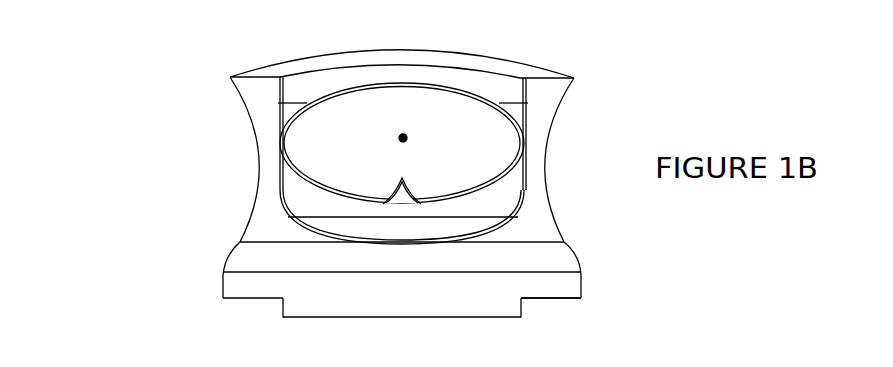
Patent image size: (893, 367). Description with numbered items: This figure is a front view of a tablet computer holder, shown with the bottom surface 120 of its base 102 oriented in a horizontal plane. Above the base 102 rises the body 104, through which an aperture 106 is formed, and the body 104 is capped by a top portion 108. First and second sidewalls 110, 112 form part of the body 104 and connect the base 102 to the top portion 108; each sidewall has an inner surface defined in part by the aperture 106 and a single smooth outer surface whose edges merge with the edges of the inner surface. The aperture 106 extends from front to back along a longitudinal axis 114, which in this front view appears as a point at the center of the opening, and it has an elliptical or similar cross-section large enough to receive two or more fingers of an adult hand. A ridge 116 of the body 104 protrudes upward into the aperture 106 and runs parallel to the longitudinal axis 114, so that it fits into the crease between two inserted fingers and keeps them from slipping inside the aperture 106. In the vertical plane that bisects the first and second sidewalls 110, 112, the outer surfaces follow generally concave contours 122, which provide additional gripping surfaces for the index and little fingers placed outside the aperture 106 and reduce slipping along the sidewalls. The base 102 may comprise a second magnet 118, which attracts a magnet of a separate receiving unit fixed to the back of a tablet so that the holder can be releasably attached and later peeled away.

The base 102 is at (207, 275).
The body 104 is at (265, 218).
The aperture 106 is at (447, 122).
The top portion 108 is at (390, 53).
The first sidewall 110 is at (265, 163).
The second sidewall 112 is at (536, 168).
The longitudinal axis 114 is at (408, 152).
The ridge 116 is at (398, 180).
The second magnet 118 is at (393, 318).
The bottom surface 120 is at (551, 303).
The concave contour 122 is at (255, 180).